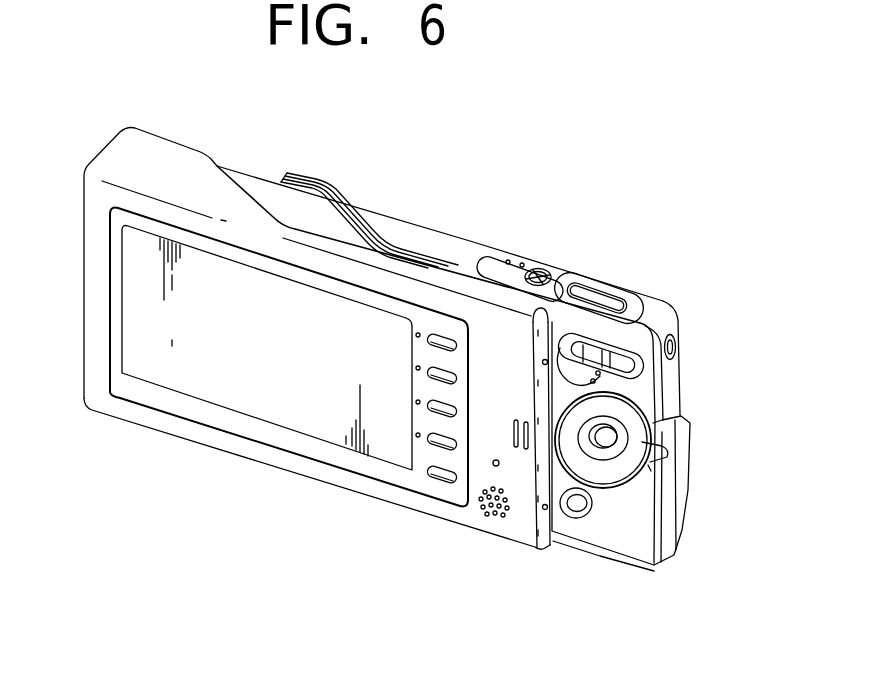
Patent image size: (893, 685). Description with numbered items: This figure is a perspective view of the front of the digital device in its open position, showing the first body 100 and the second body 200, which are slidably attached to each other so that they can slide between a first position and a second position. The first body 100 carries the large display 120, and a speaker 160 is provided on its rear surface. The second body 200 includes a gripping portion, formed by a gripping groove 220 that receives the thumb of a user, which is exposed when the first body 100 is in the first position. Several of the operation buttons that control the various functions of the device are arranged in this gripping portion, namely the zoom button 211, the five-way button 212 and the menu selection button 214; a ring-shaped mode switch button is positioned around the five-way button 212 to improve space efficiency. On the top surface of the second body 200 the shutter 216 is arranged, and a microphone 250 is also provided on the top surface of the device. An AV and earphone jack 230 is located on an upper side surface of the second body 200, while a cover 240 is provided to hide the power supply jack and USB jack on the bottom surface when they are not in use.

The first body 100 is at (151, 428).
The display 120 is at (282, 410).
The speaker 160 is at (490, 518).
The second body 200 is at (569, 248).
The zoom button 211 is at (608, 364).
The 5-way button 212 is at (640, 410).
The menu selection button 214 is at (570, 517).
The shutter 216 is at (603, 293).
The gripping groove 220 is at (581, 368).
The AV and earphone jack 230 is at (678, 353).
The cover 240 is at (677, 518).
The microphone 250 is at (509, 260).